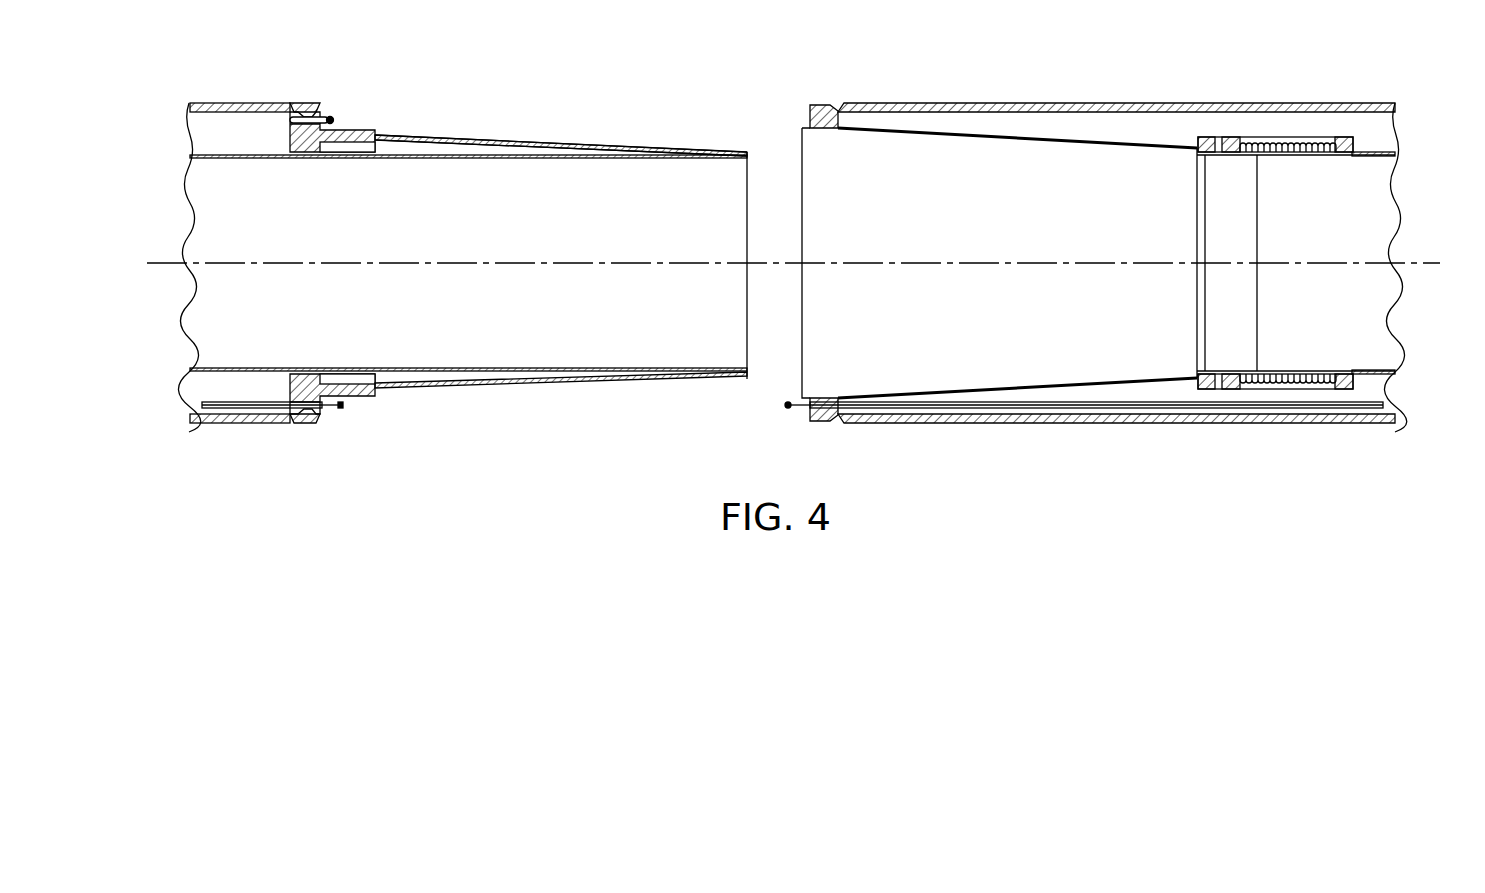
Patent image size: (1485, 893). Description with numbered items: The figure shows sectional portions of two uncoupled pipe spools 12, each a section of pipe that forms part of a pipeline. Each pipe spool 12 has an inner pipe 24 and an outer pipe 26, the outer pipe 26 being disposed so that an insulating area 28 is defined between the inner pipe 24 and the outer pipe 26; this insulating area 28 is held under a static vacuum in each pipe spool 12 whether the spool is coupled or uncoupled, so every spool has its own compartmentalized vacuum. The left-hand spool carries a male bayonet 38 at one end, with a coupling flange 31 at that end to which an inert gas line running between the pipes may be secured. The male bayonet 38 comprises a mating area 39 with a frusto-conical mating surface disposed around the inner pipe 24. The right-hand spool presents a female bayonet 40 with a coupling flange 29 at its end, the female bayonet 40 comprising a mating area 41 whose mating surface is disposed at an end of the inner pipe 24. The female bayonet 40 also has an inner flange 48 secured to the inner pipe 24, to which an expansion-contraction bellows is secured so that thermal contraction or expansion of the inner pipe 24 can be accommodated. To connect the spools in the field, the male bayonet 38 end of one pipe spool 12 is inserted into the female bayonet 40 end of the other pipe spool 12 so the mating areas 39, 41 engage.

The pipe spool 12 is at (227, 103).
The inner pipe 24 is at (467, 158).
The outer pipe 26 is at (243, 424).
The insulating area 28 is at (200, 127).
The coupling flange 29 is at (826, 103).
The coupling flange 31 is at (352, 132).
The male bayonet 38 is at (528, 140).
The mating area 39 is at (467, 383).
The female bayonet 40 is at (925, 383).
The mating area 41 is at (983, 145).
The inner flange 48 is at (1257, 315).